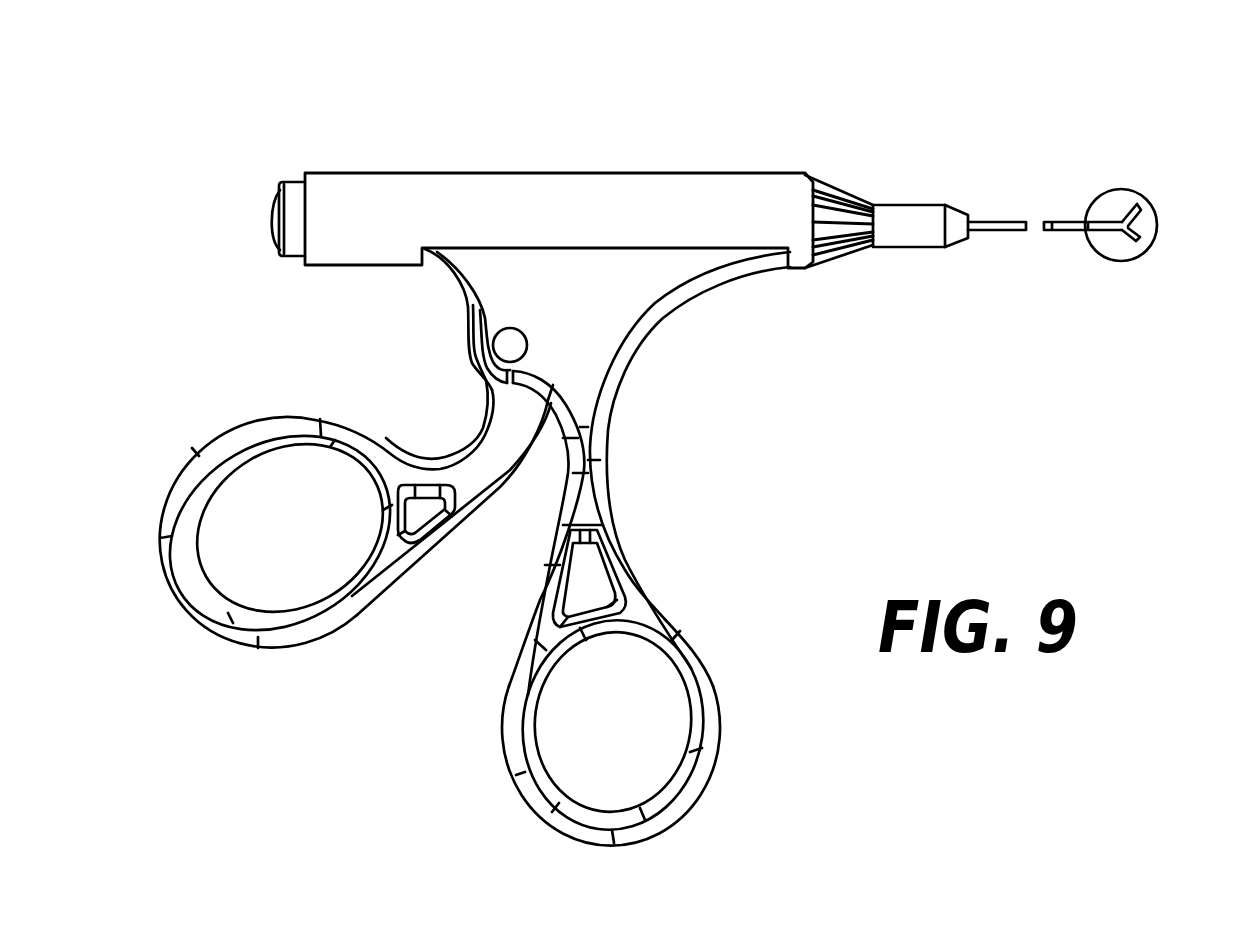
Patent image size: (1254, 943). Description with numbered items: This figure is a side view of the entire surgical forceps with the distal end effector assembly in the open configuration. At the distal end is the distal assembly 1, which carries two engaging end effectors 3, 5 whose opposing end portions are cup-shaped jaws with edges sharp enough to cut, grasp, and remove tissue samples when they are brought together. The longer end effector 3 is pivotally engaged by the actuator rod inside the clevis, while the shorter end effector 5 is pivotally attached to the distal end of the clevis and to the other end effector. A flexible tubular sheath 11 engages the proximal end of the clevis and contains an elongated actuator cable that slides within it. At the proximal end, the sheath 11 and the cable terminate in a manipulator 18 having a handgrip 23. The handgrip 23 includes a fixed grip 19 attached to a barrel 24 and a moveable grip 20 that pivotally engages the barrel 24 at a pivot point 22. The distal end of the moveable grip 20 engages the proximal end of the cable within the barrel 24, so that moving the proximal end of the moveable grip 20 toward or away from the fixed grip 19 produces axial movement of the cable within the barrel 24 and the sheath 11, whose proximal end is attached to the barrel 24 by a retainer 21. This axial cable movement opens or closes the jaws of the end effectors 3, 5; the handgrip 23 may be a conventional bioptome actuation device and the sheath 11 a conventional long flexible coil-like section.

The distal assembly 1 is at (1118, 208).
The end effector 3 is at (1138, 203).
The end effector 5 is at (1112, 258).
The tubular sheath 11 is at (1075, 235).
The manipulator 18 is at (552, 166).
The fixed grip 19 is at (670, 782).
The moveable grip 20 is at (388, 572).
The retainer 21 is at (898, 212).
The pivot point 22 is at (508, 332).
The handgrip 23 is at (495, 617).
The barrel 24 is at (638, 195).